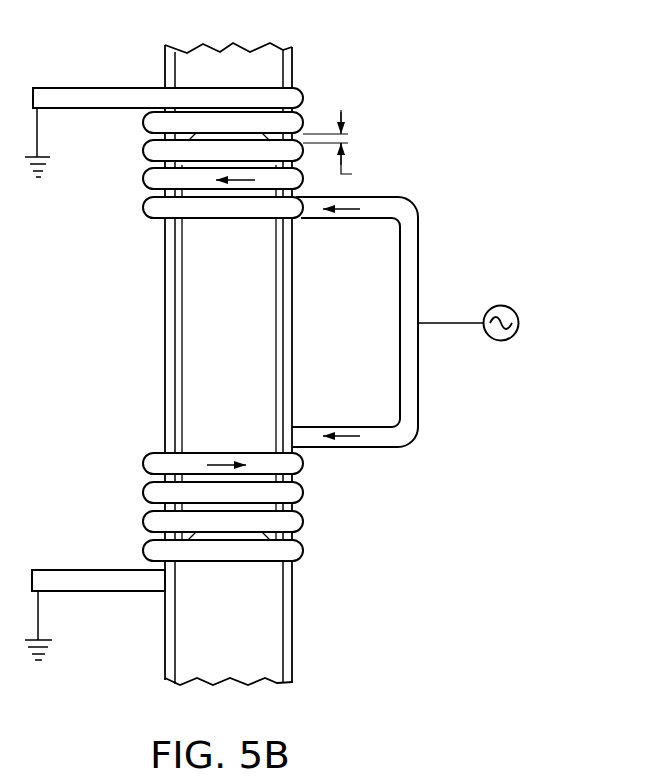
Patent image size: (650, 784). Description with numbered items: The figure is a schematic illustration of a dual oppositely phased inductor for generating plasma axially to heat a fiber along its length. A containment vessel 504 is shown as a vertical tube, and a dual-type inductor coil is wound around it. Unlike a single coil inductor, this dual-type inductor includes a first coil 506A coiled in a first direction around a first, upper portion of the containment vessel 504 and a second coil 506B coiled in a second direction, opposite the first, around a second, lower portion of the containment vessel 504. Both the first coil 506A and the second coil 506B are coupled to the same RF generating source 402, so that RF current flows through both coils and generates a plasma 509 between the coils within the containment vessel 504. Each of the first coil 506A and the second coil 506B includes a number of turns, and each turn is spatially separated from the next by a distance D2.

The containment vessel 504 is at (302, 66).
The first coil 506A is at (352, 97).
The second coil 506B is at (346, 523).
The plasma 509 is at (187, 377).
The RF generating source 402 is at (519, 322).
The distance D2 is at (346, 150).